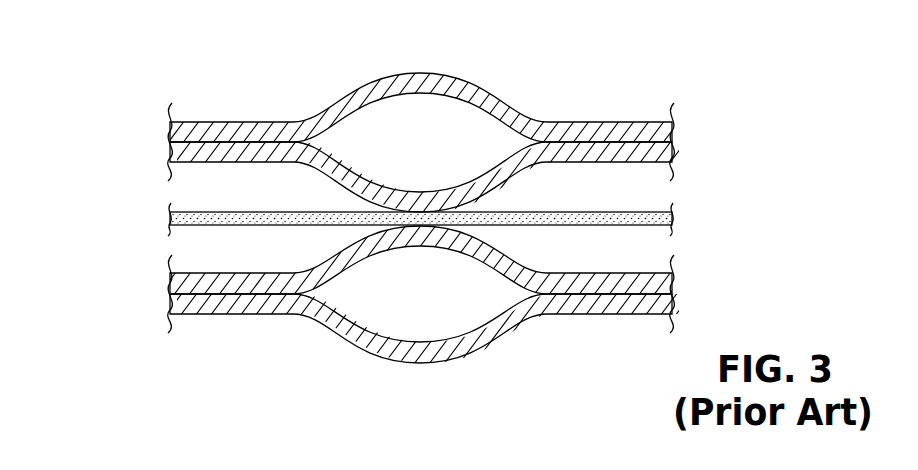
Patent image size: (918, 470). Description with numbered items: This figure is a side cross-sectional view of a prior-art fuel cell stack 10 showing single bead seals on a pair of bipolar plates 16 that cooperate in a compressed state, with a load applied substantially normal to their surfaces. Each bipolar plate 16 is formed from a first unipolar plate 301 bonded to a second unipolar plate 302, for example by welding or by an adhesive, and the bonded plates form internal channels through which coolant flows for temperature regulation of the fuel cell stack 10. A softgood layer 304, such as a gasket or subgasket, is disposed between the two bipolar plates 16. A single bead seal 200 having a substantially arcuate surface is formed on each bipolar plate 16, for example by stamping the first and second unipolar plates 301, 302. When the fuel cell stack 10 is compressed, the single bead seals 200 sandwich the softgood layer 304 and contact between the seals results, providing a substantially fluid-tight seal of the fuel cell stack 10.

The fuel cell stack 10 is at (528, 68).
The bipolar plate 16 is at (169, 142).
The single bead seal 200 is at (323, 104).
The first unipolar plate 301 is at (674, 125).
The second unipolar plate 302 is at (674, 156).
The softgood layer 304 is at (674, 217).